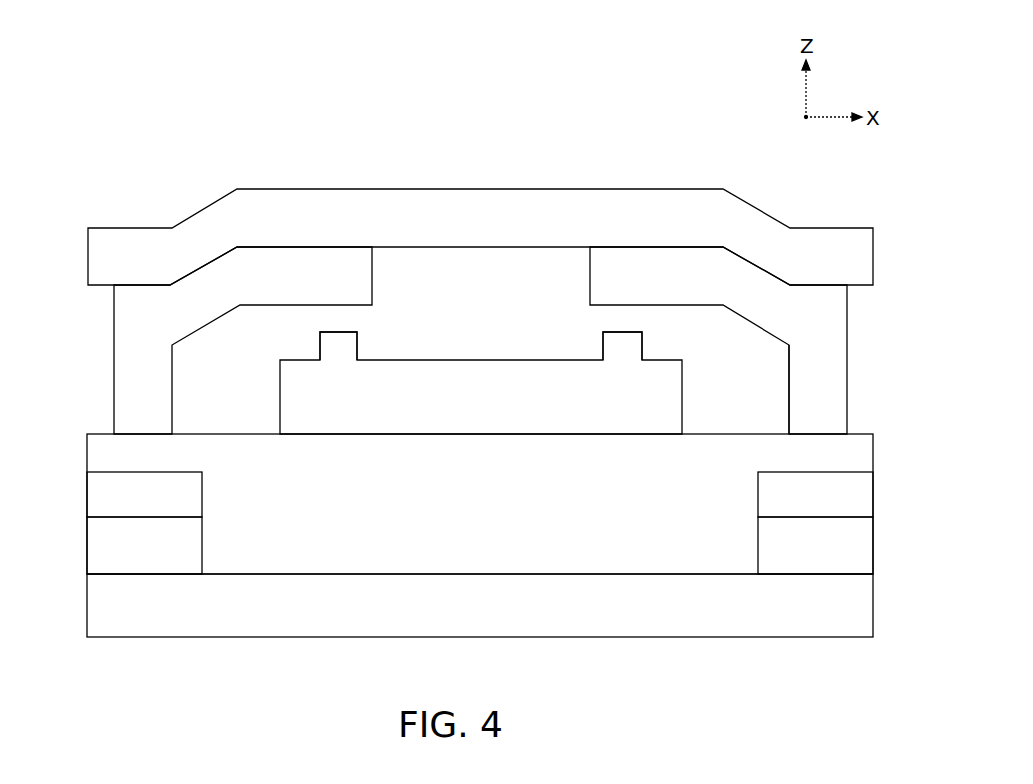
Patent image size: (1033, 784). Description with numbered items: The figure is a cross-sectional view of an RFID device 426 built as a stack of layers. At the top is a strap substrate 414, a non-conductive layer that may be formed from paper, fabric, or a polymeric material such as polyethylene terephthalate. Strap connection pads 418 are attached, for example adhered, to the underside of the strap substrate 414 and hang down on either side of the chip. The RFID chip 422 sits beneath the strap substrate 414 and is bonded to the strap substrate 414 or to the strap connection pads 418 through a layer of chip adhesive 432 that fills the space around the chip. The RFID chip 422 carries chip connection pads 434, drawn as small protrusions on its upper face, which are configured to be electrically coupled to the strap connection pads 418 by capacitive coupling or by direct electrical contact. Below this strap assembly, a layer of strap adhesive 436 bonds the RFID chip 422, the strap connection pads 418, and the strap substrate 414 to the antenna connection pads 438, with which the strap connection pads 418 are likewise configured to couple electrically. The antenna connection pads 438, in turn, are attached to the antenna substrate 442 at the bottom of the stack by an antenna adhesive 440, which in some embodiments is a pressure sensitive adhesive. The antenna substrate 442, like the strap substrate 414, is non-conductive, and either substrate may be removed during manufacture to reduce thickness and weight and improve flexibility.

The strap substrate 414 is at (868, 255).
The strap connection pads 418 is at (130, 329).
The RFID chip 422 is at (662, 395).
The RFID device 426 is at (166, 140).
The chip adhesive 432 is at (780, 388).
The chip connection pads 434 is at (332, 346).
The strap adhesive 436 is at (855, 457).
The antenna connection pads 438 is at (109, 496).
The antenna adhesive 440 is at (109, 543).
The antenna substrate 442 is at (855, 600).